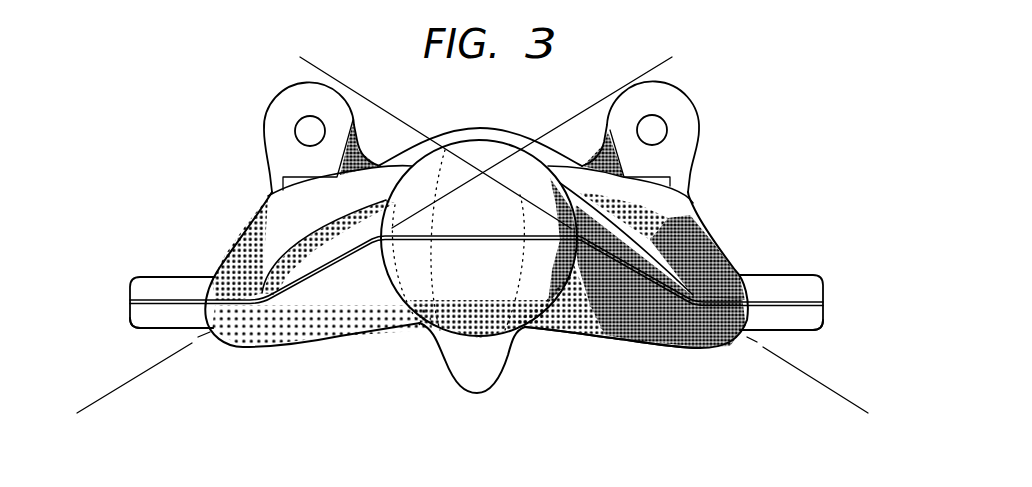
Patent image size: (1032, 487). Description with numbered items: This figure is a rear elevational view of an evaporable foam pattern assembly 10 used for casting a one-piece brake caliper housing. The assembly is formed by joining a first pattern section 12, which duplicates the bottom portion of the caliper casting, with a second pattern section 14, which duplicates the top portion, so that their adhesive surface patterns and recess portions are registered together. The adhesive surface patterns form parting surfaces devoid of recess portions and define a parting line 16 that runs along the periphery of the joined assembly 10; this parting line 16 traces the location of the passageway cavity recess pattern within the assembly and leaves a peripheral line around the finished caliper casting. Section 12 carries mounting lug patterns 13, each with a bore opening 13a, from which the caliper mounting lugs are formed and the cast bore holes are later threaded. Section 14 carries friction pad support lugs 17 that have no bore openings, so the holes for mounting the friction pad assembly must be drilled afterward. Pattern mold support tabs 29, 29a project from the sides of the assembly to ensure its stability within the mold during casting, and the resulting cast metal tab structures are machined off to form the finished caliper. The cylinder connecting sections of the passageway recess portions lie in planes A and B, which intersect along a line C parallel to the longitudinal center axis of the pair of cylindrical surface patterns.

The evaporable pattern assembly 10 is at (215, 209).
The pattern section 12 is at (677, 235).
The mounting lug patterns 13 is at (293, 103).
The bore opening 13a is at (296, 130).
The pattern section 14 is at (607, 340).
The parting line 16 is at (247, 302).
The friction pad support lugs 17 is at (477, 372).
The pattern mold support tab 29 is at (132, 288).
The pattern mold support tab 29a is at (143, 317).
The plane A is at (120, 387).
The plane B is at (833, 392).
The line C is at (482, 170).